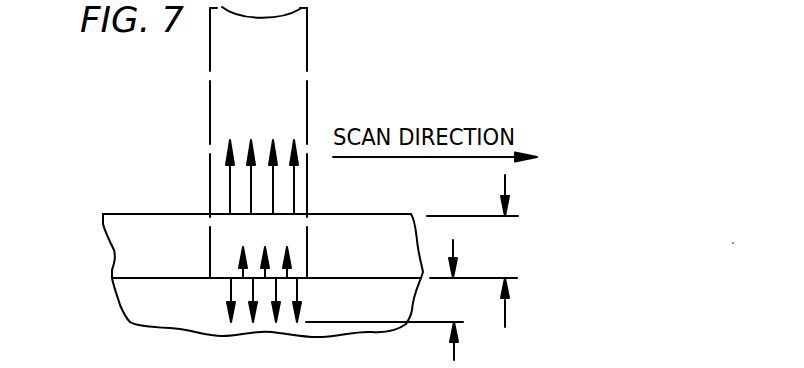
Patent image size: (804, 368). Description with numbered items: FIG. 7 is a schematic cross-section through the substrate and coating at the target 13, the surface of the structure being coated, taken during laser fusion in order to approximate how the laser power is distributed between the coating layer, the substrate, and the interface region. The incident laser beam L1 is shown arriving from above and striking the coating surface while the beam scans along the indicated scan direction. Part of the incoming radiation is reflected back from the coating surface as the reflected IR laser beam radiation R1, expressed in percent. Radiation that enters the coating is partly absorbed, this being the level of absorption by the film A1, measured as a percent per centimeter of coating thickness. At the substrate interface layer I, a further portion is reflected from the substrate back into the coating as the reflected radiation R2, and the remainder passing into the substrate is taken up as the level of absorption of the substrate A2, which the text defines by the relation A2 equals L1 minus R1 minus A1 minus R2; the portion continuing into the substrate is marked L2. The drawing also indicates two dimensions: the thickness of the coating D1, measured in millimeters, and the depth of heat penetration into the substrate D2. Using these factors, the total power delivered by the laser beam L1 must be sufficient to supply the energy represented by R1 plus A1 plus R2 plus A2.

The target 13 is at (228, 278).
The level of absorption by the film A1 is at (382, 249).
The level of absorption of the substrate A2 is at (266, 307).
The substrate interface layer I is at (163, 277).
The laser beam L1 is at (341, 80).
The transmitted beam L2 is at (345, 300).
The reflected IR laser beam radiation from the coating surface R1 is at (268, 109).
The reflected IR laser beam radiation from the substrate R2 is at (265, 247).
The thickness of the coating D1 is at (511, 241).
The depth of heat penetration into the substrate D2 is at (473, 319).